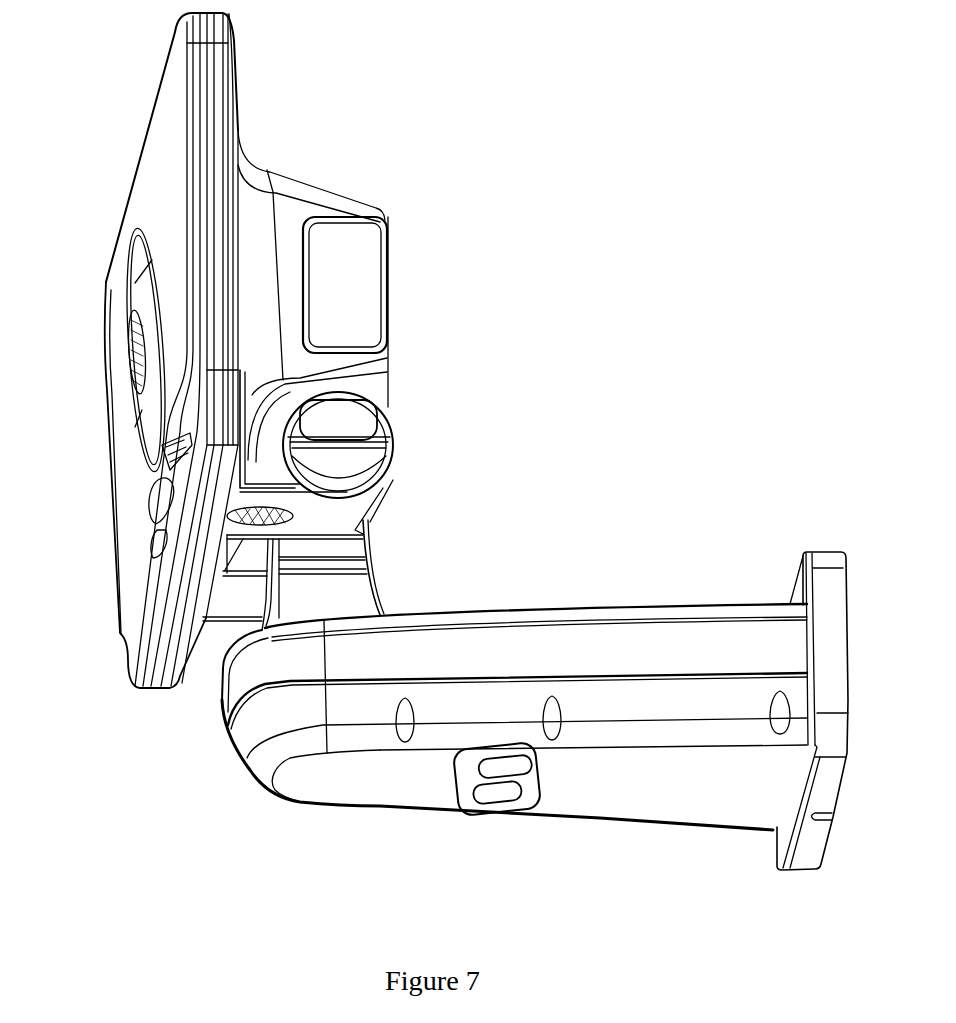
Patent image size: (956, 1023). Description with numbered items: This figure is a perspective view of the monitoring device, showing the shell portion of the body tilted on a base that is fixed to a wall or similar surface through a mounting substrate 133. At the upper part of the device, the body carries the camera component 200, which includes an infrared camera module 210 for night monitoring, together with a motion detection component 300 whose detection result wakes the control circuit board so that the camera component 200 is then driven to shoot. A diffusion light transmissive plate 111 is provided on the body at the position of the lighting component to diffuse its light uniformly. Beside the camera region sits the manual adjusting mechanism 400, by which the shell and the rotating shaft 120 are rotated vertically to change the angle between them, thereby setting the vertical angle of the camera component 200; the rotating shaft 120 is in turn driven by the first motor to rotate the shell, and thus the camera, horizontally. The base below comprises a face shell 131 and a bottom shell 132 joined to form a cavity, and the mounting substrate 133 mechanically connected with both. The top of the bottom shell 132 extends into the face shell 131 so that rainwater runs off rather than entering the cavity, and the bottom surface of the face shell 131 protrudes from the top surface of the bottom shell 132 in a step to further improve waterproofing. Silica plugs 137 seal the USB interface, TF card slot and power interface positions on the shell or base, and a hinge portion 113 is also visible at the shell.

The diffusion light transmissive plate 111 is at (118, 310).
The hinge portion 113 is at (188, 450).
The rotating shaft 120 is at (340, 590).
The face shell 131 is at (605, 640).
The bottom shell 132 is at (655, 780).
The mounting substrate 133 is at (830, 583).
The silica plugs 137 is at (356, 297).
The camera component 200 is at (147, 415).
The infrared camera module 210 is at (130, 348).
The motion detection component 300 is at (158, 503).
The manual adjusting mechanism 400 is at (350, 455).